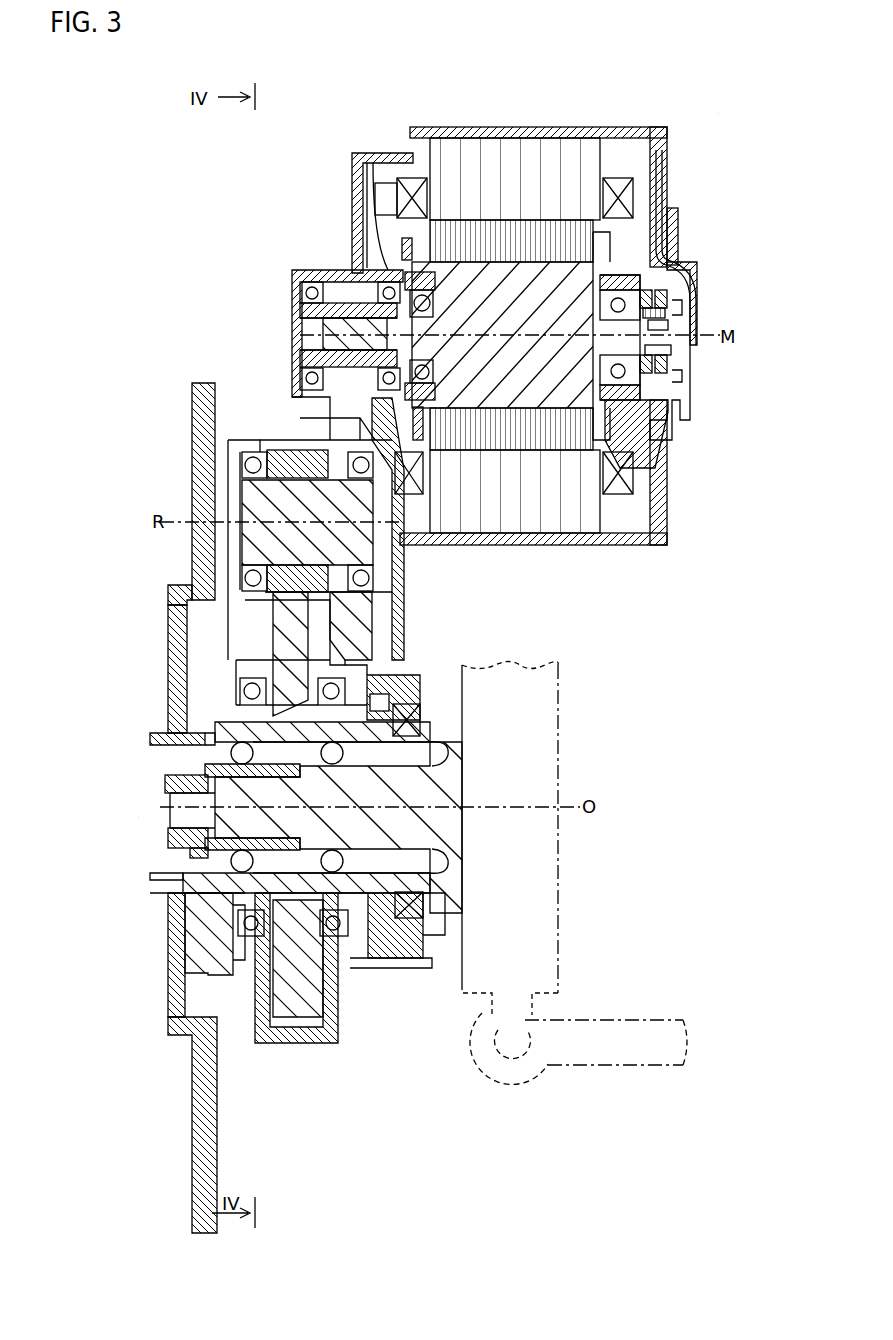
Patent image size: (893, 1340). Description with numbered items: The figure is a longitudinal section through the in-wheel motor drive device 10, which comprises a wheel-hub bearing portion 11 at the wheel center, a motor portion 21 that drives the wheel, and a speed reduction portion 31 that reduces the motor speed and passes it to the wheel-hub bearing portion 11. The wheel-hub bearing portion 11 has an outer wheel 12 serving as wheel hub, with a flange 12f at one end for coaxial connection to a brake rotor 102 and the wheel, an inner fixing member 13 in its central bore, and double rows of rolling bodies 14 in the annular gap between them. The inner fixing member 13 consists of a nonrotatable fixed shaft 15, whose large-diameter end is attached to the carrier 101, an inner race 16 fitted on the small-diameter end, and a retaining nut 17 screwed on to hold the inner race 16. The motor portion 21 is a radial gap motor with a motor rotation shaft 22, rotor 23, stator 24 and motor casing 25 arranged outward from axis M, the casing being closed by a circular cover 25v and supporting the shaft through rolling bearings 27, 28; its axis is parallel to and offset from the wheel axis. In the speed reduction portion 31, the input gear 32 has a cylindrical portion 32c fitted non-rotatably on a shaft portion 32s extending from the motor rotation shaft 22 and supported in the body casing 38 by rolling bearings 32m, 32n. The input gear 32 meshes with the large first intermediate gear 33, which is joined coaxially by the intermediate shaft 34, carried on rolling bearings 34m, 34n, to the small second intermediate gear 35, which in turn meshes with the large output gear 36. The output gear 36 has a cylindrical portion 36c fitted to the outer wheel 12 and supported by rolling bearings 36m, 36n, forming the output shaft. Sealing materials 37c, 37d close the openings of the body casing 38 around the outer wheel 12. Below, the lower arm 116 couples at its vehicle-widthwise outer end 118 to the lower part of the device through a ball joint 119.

The in-wheel motor drive device 10 is at (730, 111).
The wheel-hub bearing portion 11 is at (125, 822).
The outer wheel 12 is at (160, 736).
The flange 12f is at (195, 684).
The inner fixing member 13 is at (160, 807).
The rolling bodies 14 is at (180, 850).
The fixed shaft 15 is at (440, 768).
The inner race 16 is at (183, 760).
The retaining nut 17 is at (168, 780).
The motor portion 21 is at (705, 212).
The motor rotation shaft 22 is at (668, 318).
The rotor 23 is at (655, 440).
The stator 24 is at (502, 165).
The motor casing 25 is at (546, 132).
The cover 25v is at (660, 522).
The rolling bearing 27 is at (368, 163).
The rolling bearing 28 is at (660, 270).
The speed reduction portion 31 is at (427, 592).
The input gear 32 is at (338, 306).
The cylindrical portion 32c is at (300, 318).
The rolling bearing 32m is at (300, 295).
The rolling bearing 32n is at (405, 292).
The shaft portion 32s is at (330, 335).
The first intermediate gear 33 is at (375, 680).
The intermediate shaft 34 is at (250, 500).
The rolling bearing 34m is at (244, 465).
The rolling bearing 34n is at (400, 538).
The second intermediate gear 35 is at (290, 455).
The output gear 36 is at (300, 1022).
The cylindrical portion 36c is at (200, 884).
The rolling bearing 36m is at (251, 932).
The rolling bearing 36n is at (338, 932).
The sealing material 37c is at (180, 912).
The sealing material 37d is at (432, 920).
The body casing 38 is at (300, 272).
The carrier 101 is at (560, 722).
The brake rotor 102 is at (205, 562).
The lower arm 116 is at (643, 1068).
The vehicle-widthwise outer end 118 is at (537, 1076).
The ball joint 119 is at (500, 1062).